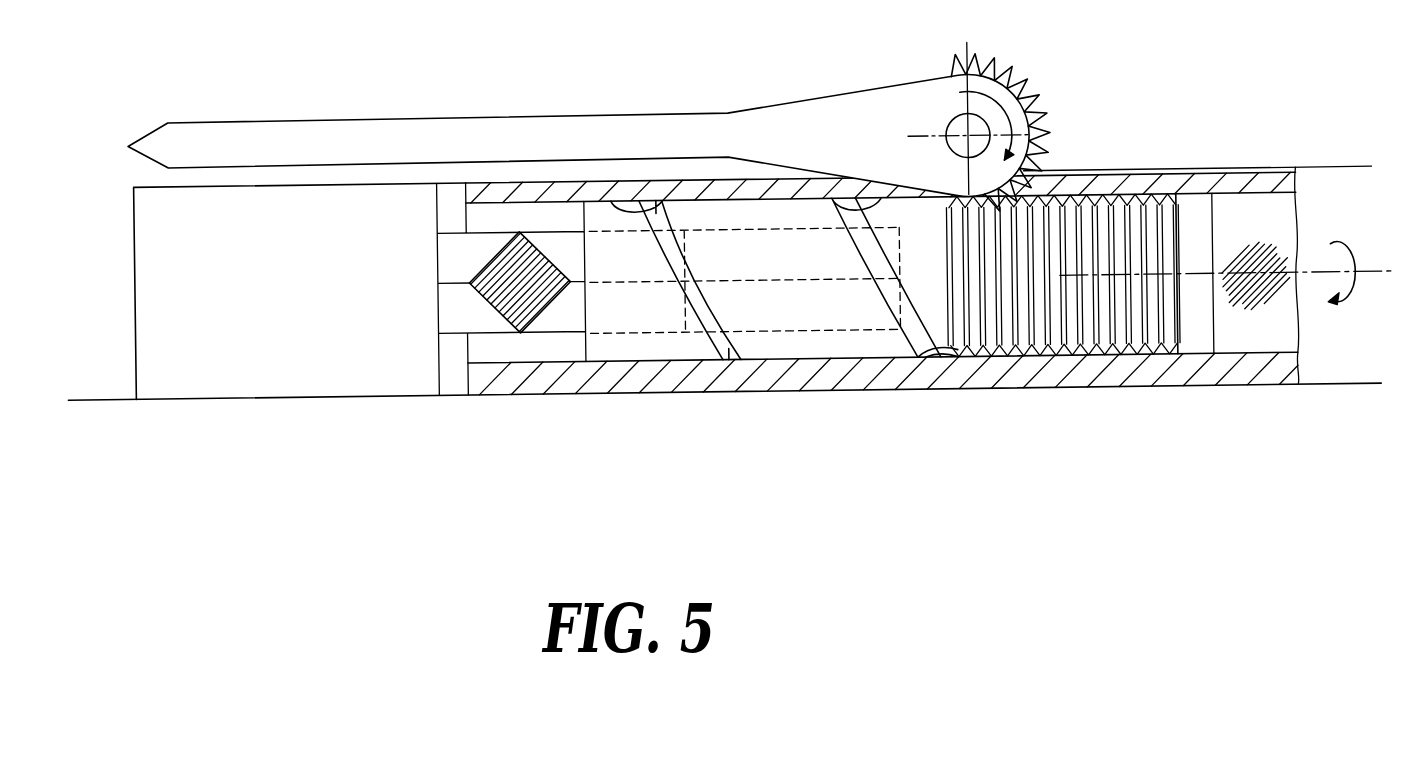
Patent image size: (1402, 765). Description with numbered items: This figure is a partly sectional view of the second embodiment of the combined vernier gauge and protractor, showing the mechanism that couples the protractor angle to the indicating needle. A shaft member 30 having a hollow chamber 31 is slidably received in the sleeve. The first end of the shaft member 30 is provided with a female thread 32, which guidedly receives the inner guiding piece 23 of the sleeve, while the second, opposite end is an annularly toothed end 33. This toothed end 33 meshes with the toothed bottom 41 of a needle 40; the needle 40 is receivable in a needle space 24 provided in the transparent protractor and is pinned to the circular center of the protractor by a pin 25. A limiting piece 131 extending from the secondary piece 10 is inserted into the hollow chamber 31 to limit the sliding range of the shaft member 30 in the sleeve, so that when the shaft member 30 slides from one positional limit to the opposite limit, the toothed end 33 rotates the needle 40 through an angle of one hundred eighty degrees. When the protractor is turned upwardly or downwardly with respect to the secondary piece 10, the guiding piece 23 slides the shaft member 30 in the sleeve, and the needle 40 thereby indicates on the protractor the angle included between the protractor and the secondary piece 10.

The secondary piece 10 is at (348, 374).
The limiting piece 131 is at (468, 304).
The needle 40 is at (509, 130).
The pin 25 is at (949, 134).
The toothed bottom 41 is at (1017, 81).
The needle space 24 is at (709, 192).
The inner guiding piece 23 is at (614, 201).
The shaft member 30 is at (646, 349).
The hollow chamber 31 is at (782, 308).
The female thread 32 is at (912, 343).
The annularly toothed end 33 is at (1174, 343).